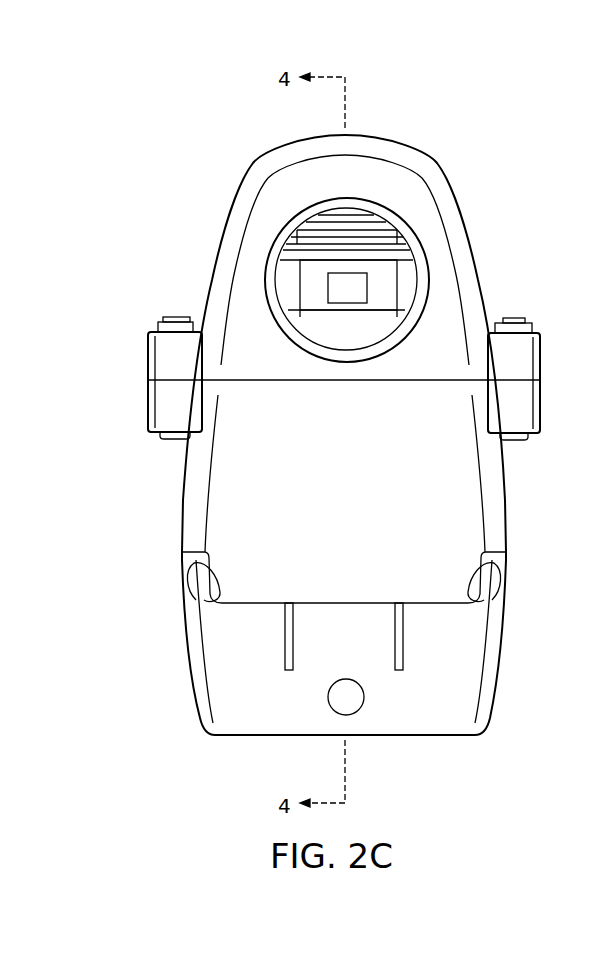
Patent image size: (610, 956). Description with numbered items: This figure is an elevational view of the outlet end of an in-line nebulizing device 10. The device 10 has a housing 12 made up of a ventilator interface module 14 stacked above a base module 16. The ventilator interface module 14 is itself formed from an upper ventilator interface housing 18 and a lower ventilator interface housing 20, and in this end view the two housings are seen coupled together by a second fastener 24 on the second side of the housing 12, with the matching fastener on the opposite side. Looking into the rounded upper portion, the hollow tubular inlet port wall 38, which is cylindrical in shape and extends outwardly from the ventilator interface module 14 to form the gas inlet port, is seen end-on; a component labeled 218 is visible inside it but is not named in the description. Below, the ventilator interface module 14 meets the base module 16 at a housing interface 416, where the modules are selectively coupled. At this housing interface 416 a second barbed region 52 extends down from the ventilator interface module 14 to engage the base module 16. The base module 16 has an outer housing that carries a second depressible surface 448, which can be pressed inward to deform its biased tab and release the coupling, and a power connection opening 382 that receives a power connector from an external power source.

The in-line nebulizing device 10 is at (193, 90).
The housing 12 is at (408, 118).
The ventilator interface module 14 is at (156, 474).
The base module 16 is at (498, 670).
The upper ventilator interface housing 18 is at (458, 190).
The lower ventilator interface housing 20 is at (503, 483).
The second fastener 24 is at (172, 318).
The tubular inlet port wall 38 is at (283, 236).
The second barbed region 52 is at (358, 582).
The light source 218 is at (310, 294).
The power connection opening 382 is at (348, 700).
The housing interface 416 is at (526, 557).
The second depressible surface 448 is at (342, 637).